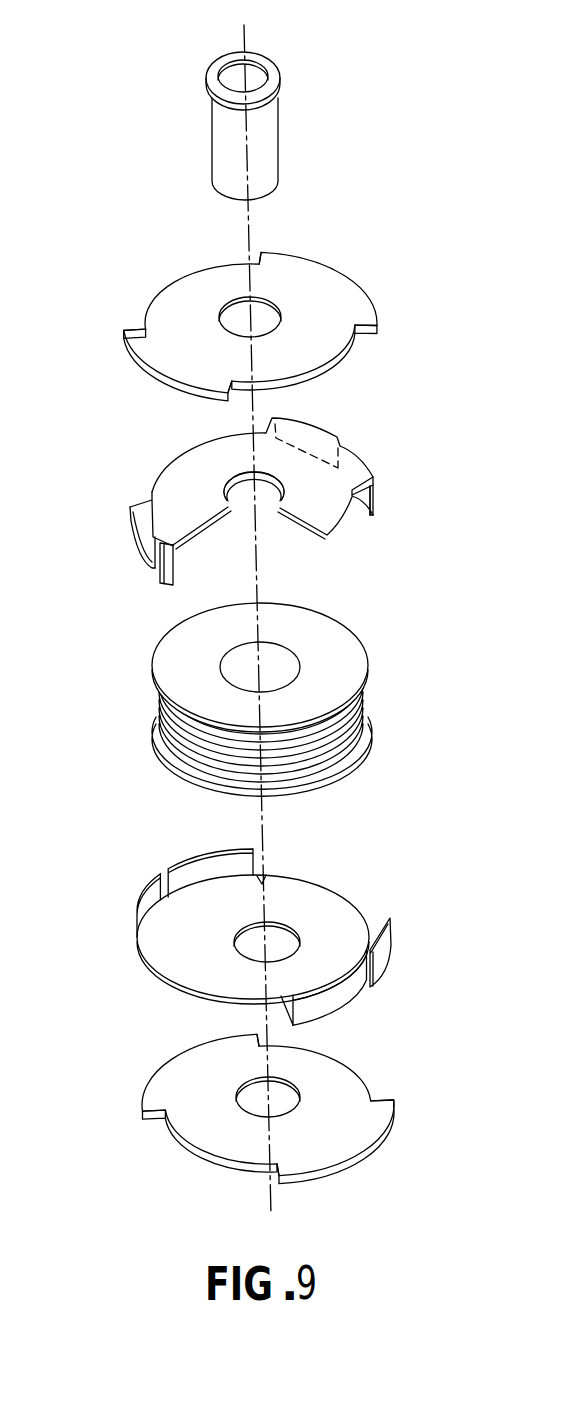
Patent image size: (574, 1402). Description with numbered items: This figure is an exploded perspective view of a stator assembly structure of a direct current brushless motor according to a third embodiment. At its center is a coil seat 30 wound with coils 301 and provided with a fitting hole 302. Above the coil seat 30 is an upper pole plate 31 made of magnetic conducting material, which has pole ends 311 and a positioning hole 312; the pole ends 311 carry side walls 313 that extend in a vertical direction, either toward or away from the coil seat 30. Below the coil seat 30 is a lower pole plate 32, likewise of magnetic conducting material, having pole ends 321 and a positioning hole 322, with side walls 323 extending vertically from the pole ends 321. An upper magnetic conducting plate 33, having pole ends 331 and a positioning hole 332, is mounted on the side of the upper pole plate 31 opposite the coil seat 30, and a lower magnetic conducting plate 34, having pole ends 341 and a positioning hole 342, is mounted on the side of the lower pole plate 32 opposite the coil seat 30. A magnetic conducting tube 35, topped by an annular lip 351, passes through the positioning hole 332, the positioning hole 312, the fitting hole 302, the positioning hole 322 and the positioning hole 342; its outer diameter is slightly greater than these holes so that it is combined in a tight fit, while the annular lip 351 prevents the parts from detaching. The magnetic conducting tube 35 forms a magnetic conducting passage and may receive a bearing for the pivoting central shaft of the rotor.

The coil seat 30 is at (165, 682).
The coils 301 is at (347, 733).
The fitting hole 302 is at (237, 665).
The upper pole plate 31 is at (332, 512).
The pole ends 311 is at (370, 468).
The positioning hole 312 is at (263, 503).
The side walls 313 is at (140, 537).
The lower pole plate 32 is at (180, 963).
The pole ends 321 is at (265, 878).
The positioning hole 322 is at (287, 942).
The side walls 323 is at (175, 867).
The upper magnetic conducting plate 33 is at (325, 337).
The pole ends 331 is at (345, 272).
The positioning hole 332 is at (232, 320).
The lower magnetic conducting plate 34 is at (353, 1082).
The pole ends 341 is at (147, 1087).
The positioning hole 342 is at (252, 1108).
The magnetic conducting tube 35 is at (268, 143).
The annular lip 351 is at (280, 76).